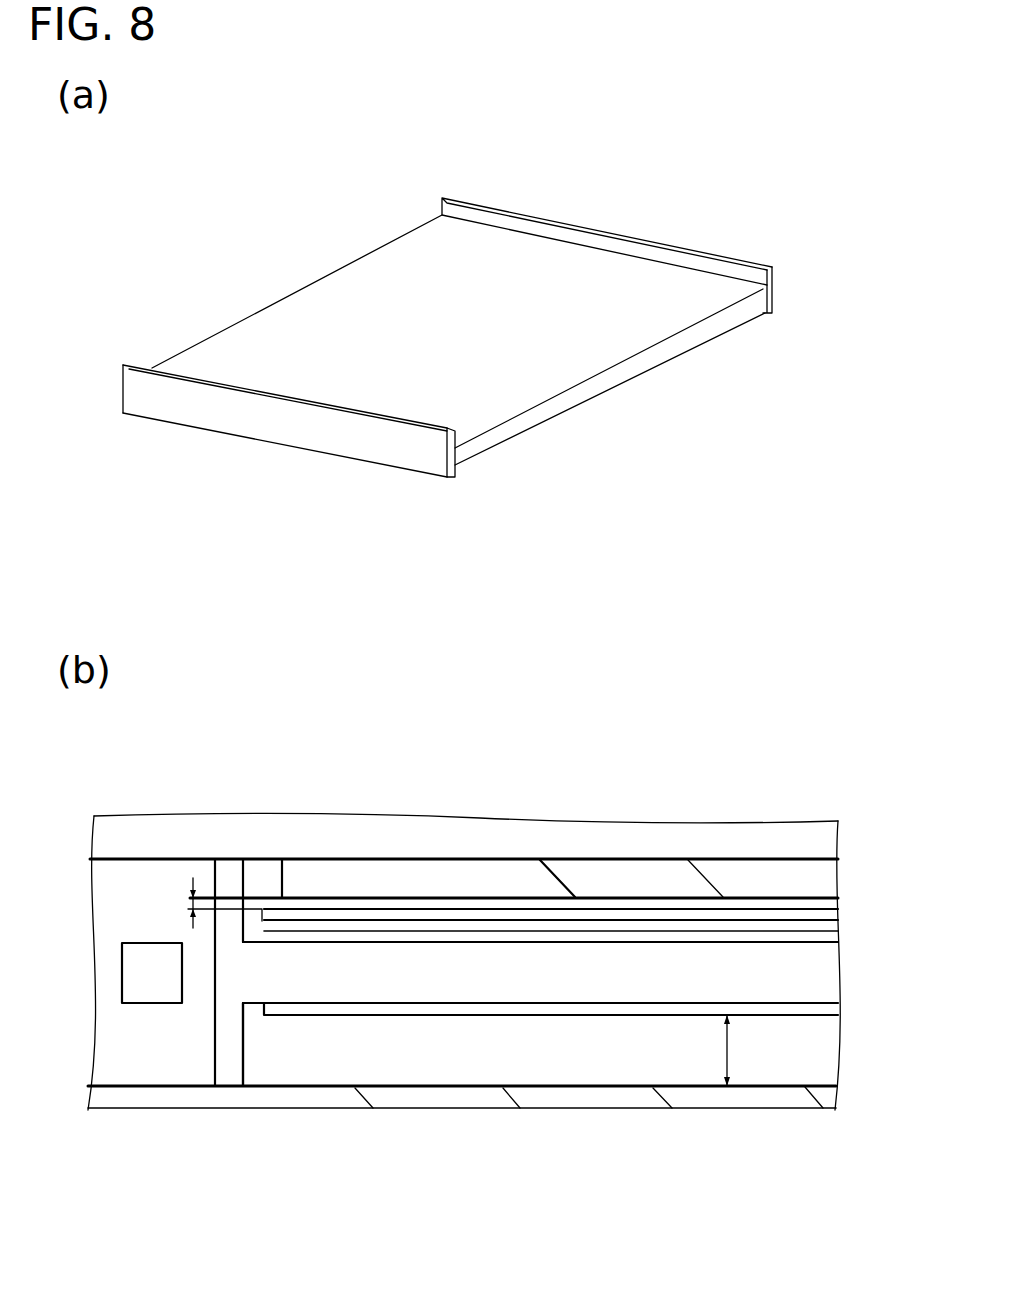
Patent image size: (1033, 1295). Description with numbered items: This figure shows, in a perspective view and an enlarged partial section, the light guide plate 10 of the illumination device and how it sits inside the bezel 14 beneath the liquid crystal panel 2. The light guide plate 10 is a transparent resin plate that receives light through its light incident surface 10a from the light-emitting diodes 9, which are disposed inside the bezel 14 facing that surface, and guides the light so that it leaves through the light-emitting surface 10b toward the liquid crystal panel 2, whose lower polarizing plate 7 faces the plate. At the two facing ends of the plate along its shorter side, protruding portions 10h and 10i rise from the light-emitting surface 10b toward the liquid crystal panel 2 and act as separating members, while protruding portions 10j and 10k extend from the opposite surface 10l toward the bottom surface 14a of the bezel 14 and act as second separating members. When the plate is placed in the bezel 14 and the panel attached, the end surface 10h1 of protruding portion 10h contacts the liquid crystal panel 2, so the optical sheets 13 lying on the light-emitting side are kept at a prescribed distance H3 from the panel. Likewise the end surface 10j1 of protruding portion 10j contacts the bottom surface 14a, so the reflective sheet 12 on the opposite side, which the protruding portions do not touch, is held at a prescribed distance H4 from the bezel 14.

The liquid crystal panel 2 is at (638, 823).
The polarizing plate 7 is at (815, 878).
The light-emitting diodes 9 is at (152, 975).
The light guide plate 10 is at (320, 214).
The light incident surface 10a is at (262, 417).
The light-emitting surface 10b is at (320, 317).
The protruding portion 10h is at (293, 405).
The end surface of protruding portion 10h1 is at (228, 859).
The protruding portion 10i is at (628, 247).
The protruding portion 10j is at (297, 447).
The end surface of protruding portion 10j1 is at (210, 1087).
The protruding portion 10k is at (748, 312).
The opposite surface 10l is at (252, 1086).
The reflective sheet 12 is at (823, 1010).
The optical sheets 13 is at (805, 937).
The bezel 14 is at (422, 1115).
The bottom surface of bezel 14a is at (505, 1078).
The space between optical sheets and liquid crystal panel H3 is at (193, 900).
The space between reflective sheet and bezel H4 is at (730, 1050).